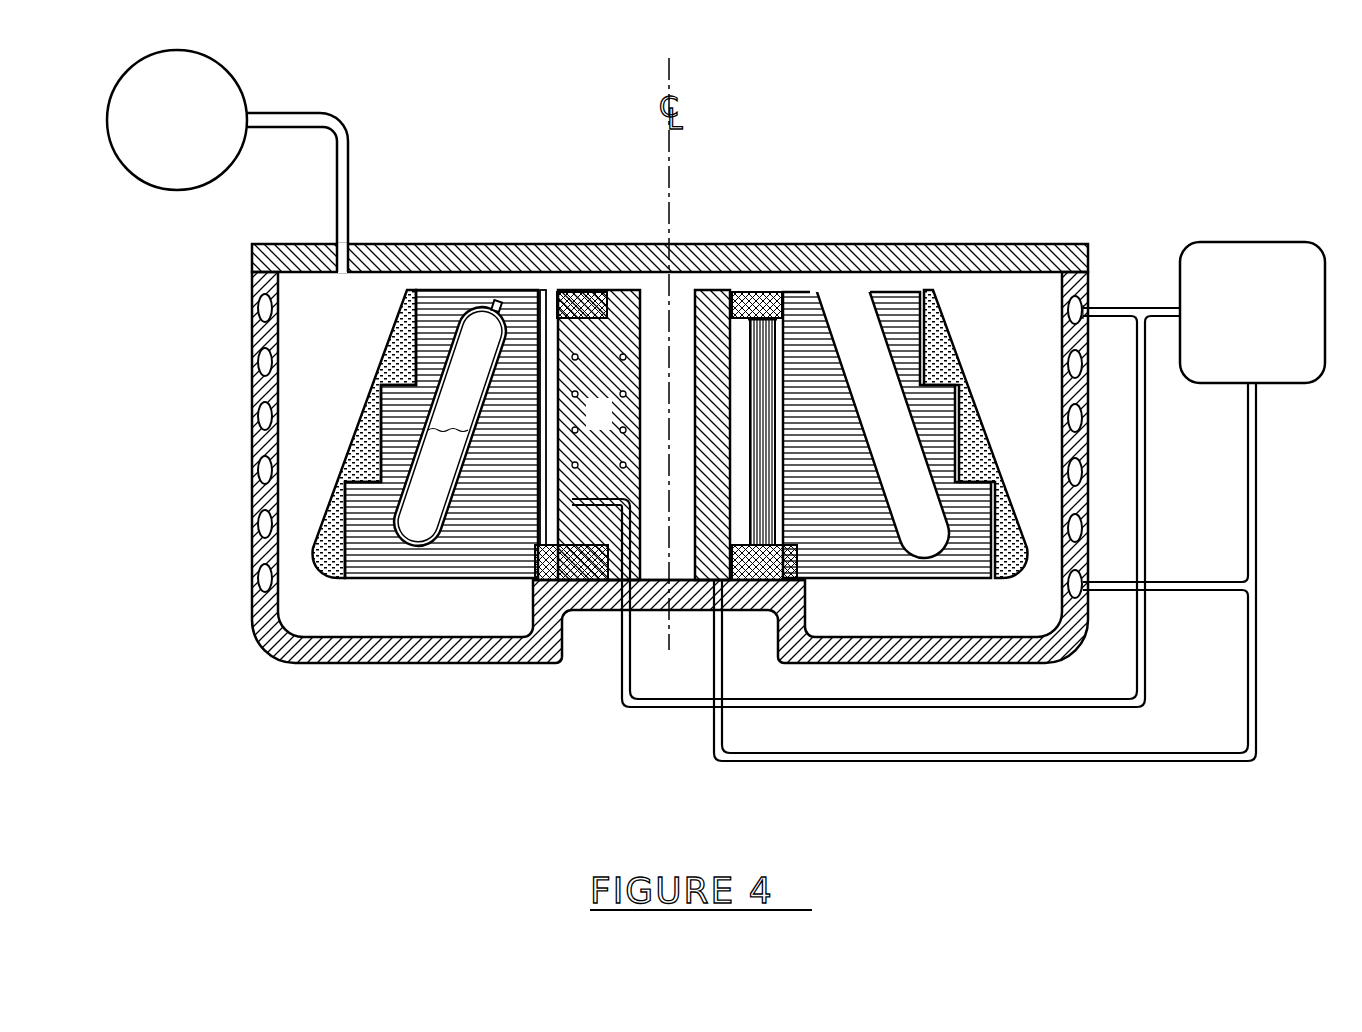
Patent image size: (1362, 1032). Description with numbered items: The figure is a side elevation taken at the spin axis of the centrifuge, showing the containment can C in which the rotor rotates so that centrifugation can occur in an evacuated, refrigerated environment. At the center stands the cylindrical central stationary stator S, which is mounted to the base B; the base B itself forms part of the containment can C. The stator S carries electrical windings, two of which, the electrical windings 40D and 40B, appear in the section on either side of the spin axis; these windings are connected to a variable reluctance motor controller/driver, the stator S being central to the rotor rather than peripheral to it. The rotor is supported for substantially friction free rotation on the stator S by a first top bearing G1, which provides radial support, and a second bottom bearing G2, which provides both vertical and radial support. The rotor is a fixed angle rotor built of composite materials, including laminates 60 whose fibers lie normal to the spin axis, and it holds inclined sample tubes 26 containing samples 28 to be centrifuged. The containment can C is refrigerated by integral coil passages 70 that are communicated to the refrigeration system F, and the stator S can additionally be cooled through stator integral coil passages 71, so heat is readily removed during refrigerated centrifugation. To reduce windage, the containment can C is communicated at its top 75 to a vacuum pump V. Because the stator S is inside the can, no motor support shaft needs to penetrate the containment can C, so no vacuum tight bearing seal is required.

The inclined sample tube 26 is at (400, 465).
The sample 28 is at (410, 522).
The electrical winding 40B is at (753, 387).
The electrical winding 40D is at (570, 290).
The laminate 60 is at (950, 565).
The integral coil passage 70 is at (1085, 305).
The stator integral coil passage 71 is at (620, 353).
The top 75 is at (956, 244).
The base B is at (562, 638).
The containment can C is at (250, 398).
The central stationary stator S is at (610, 428).
The vacuum pump V is at (188, 139).
The refrigeration system F is at (1268, 332).
The first top bearing G1 is at (588, 290).
The second bottom bearing G2 is at (580, 580).